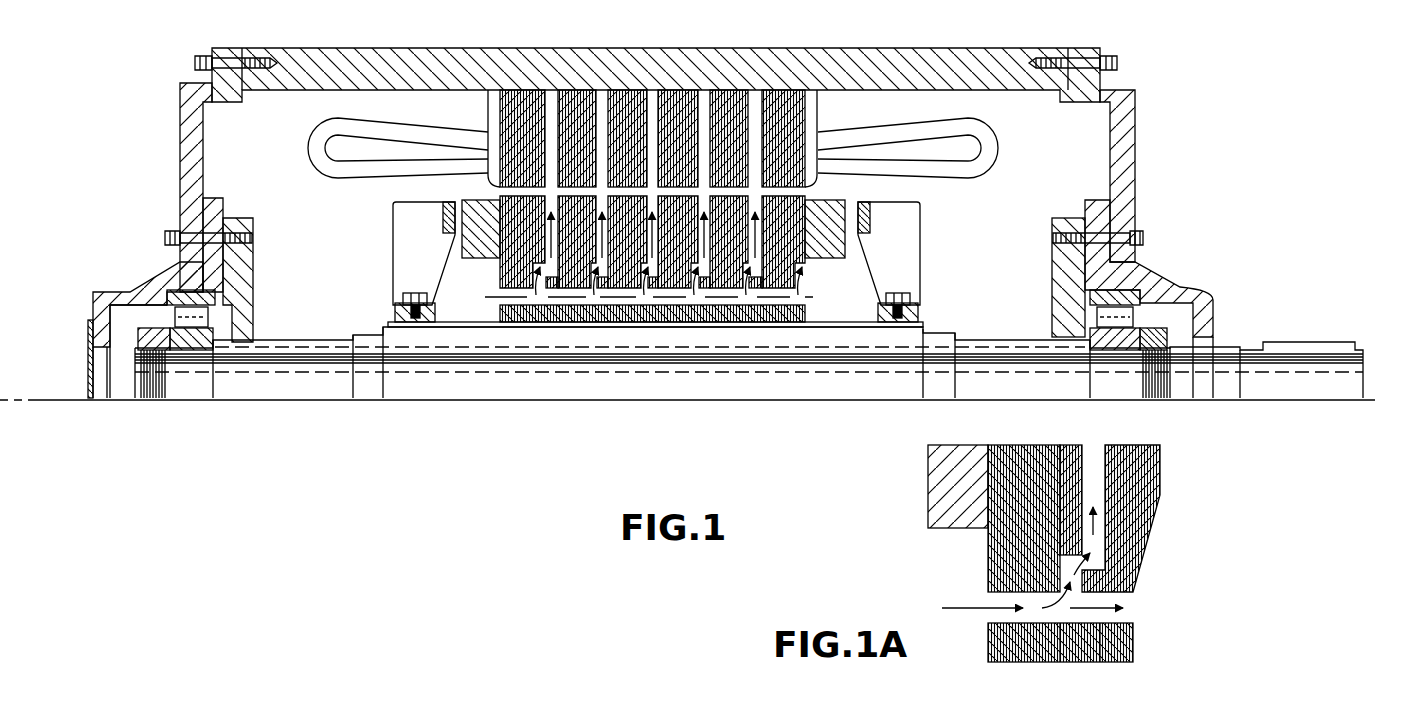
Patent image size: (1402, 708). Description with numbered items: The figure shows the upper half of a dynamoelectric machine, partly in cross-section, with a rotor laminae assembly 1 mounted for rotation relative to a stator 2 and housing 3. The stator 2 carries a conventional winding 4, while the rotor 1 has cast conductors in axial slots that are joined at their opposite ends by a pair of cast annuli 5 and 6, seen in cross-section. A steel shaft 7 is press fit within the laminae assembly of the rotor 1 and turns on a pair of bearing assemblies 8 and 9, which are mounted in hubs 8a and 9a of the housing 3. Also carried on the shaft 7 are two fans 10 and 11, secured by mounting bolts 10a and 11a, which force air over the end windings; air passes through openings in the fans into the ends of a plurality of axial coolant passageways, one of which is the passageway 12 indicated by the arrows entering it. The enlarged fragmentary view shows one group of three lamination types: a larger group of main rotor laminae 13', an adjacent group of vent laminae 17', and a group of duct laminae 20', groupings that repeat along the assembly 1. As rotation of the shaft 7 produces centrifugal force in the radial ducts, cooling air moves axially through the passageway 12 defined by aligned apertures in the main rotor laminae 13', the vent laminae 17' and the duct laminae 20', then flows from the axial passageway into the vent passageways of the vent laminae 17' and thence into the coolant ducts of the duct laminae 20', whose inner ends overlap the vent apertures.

In FIG. 1, the rotor laminae assembly 1 is at (815, 272).
In FIG. 1, the stator 2 is at (818, 113).
In FIG. 1, the housing 3 is at (1137, 100).
In FIG. 1, the winding 4 is at (985, 136).
In FIG. 1, the cast annulus 5 is at (462, 198).
In FIG. 1A, the cast annulus 5 is at (928, 470).
In FIG. 1, the cast annulus 6 is at (843, 198).
In FIG. 1, the shaft 7 is at (1002, 340).
In FIG. 1, the bearing assembly 8 is at (167, 318).
In FIG. 1, the bearing assembly 9 is at (1140, 318).
In FIG. 1, the hub 8a is at (162, 263).
In FIG. 1, the hub 9a is at (1172, 268).
In FIG. 1, the fan 10 is at (393, 238).
In FIG. 1, the fan 11 is at (920, 232).
In FIG. 1, the mounting bolt 10a is at (402, 296).
In FIG. 1, the mounting bolt 11a is at (918, 300).
In FIG. 1, the axial coolant passageway 12 is at (500, 298).
In FIG. 1A, the group of main rotor laminae 13' is at (1093, 554).
In FIG. 1A, the group of vent laminae 17' is at (1072, 556).
In FIG. 1A, the group of duct laminae 20' is at (1064, 555).